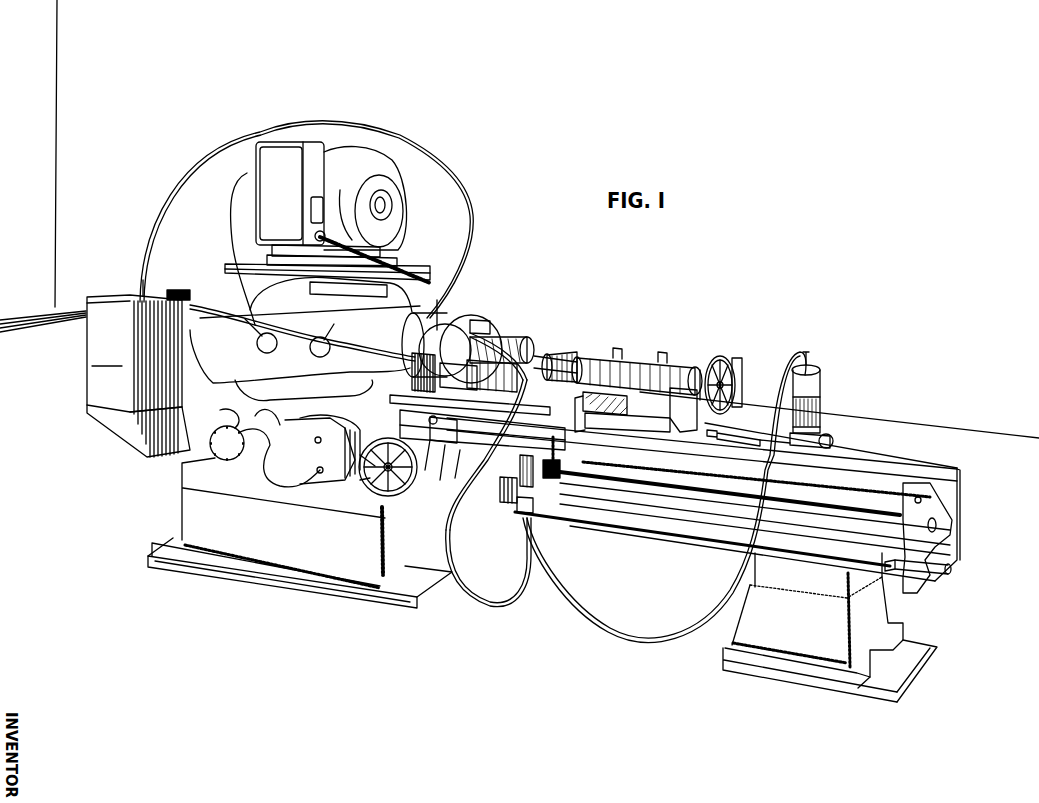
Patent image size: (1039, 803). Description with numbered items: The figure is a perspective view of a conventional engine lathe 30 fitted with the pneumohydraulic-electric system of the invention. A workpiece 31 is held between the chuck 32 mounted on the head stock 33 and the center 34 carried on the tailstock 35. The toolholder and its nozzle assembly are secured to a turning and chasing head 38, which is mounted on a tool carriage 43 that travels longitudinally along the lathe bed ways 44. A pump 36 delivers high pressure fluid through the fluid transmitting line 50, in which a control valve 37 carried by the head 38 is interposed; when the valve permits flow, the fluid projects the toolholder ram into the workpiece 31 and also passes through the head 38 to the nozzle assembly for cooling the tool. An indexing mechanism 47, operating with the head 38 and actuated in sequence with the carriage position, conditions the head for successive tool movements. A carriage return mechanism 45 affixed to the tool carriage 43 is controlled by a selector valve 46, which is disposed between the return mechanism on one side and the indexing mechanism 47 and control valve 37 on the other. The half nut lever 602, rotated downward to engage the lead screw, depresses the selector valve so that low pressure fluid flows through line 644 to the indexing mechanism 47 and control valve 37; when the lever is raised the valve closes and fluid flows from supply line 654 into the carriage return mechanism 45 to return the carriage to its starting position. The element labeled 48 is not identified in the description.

The engine lathe 30 is at (174, 519).
The workpiece 31 is at (538, 356).
The chuck 32 is at (490, 322).
The head stock 33 is at (470, 320).
The center 34 is at (578, 348).
The tailstock 35 is at (676, 372).
The pump 36 is at (80, 364).
The control valve 37 is at (410, 362).
The turning and chasing head 38 is at (458, 322).
The tool carriage 43 is at (563, 497).
The lathe bed ways 44 is at (900, 482).
The carriage return mechanism 45 is at (752, 410).
The selector valve 46 is at (503, 505).
The indexing mechanism 47 is at (508, 340).
The tool holder 48 is at (594, 362).
The fluid transmitting line 50 is at (250, 336).
The half nut lever 602 is at (497, 457).
The line 644 is at (457, 497).
The supply line 654 is at (560, 577).